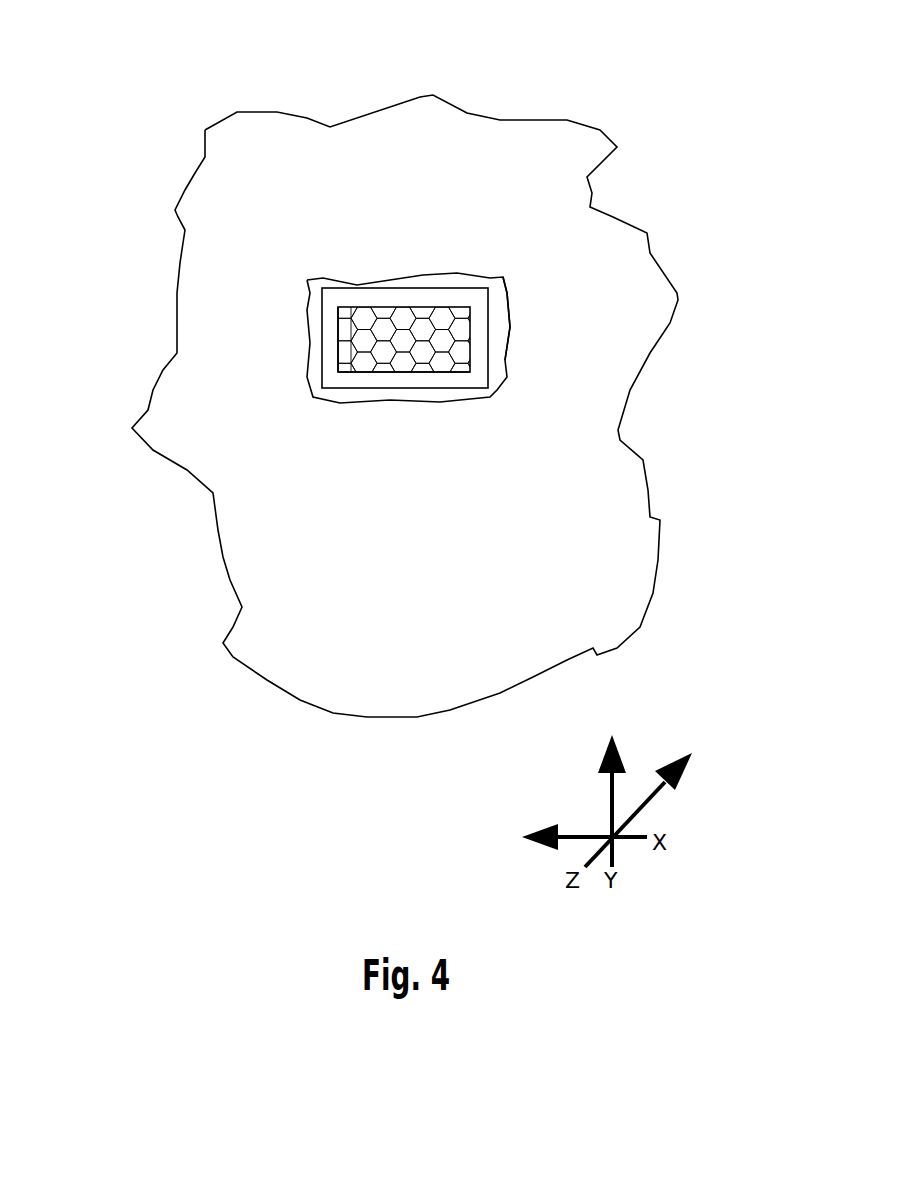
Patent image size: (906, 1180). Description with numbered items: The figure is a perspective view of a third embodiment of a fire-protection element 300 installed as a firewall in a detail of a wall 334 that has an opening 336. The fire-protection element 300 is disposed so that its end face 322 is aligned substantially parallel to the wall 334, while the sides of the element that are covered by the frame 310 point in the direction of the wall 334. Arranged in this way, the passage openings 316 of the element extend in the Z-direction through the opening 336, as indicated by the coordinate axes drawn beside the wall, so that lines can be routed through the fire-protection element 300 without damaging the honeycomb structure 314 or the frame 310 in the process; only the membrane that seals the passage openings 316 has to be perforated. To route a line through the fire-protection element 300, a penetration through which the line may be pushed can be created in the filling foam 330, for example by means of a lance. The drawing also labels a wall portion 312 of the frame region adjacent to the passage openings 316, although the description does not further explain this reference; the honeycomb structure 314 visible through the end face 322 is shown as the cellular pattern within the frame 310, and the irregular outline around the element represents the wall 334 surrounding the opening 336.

The fire-protection element 300 is at (408, 211).
The frame 310 is at (551, 330).
The first frame wall 312 is at (193, 322).
The honeycomb structure 314 is at (257, 365).
The passage openings 316 is at (198, 339).
The end face 322 is at (554, 364).
The filling foam 330 is at (554, 341).
The wall 334 is at (447, 560).
The opening 336 is at (640, 280).